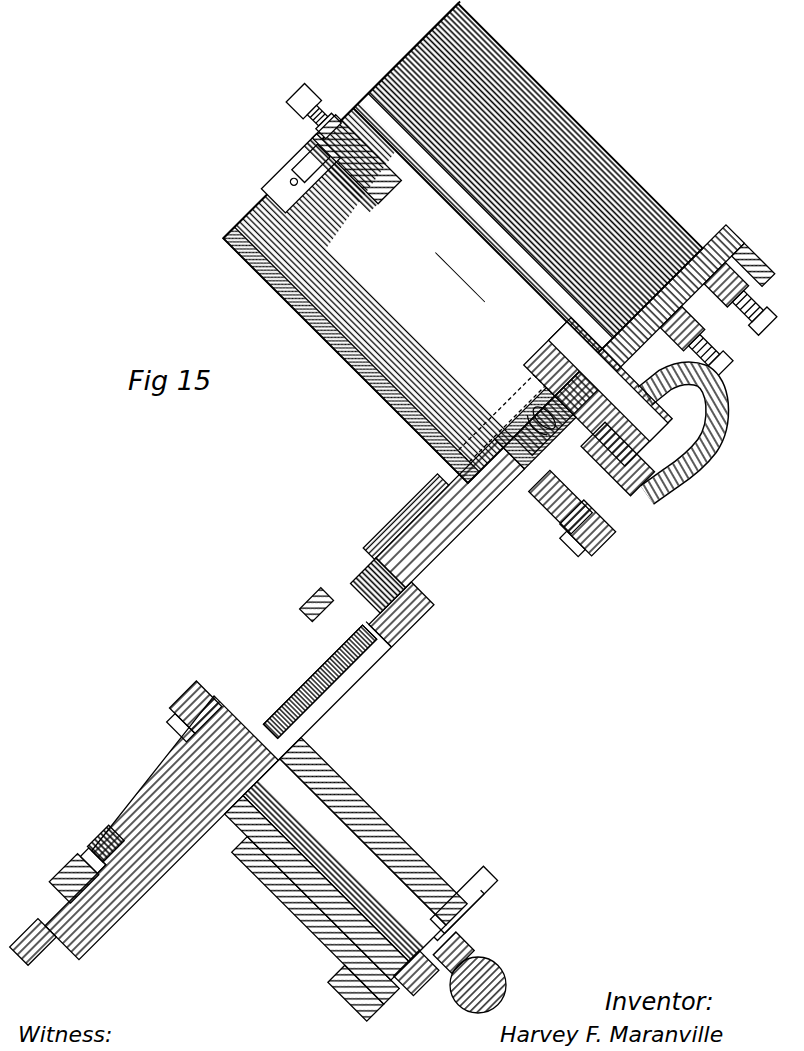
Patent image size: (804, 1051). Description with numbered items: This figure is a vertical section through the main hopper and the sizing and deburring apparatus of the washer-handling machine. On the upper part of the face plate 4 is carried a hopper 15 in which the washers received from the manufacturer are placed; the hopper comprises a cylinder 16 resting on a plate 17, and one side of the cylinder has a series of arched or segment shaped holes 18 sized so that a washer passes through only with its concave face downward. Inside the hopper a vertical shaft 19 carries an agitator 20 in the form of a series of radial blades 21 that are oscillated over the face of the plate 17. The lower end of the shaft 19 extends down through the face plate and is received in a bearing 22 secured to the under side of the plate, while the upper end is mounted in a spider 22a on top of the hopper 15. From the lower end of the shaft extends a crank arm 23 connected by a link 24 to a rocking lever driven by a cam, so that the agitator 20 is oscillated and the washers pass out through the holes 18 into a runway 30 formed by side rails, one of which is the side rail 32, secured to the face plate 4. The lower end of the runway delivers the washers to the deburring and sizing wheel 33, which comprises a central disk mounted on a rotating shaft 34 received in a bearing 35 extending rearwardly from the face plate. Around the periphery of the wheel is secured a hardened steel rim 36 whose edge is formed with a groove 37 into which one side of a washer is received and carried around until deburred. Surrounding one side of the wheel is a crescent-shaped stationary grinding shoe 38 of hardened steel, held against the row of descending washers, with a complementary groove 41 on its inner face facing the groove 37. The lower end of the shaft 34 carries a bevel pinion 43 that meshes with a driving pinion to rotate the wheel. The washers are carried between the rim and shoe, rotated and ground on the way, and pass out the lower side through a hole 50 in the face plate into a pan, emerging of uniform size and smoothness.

The hopper 15 is at (538, 108).
The cylinder 16 is at (384, 393).
The vertical shaft 19 is at (446, 240).
The spider 22a is at (412, 82).
The bearing 22 is at (694, 448).
The crank arm 23 is at (604, 490).
The link 24 is at (568, 545).
The agitator 20 is at (532, 360).
The radial blades 21 is at (542, 405).
The segment shaped holes 18 is at (548, 428).
The plate 17 is at (502, 500).
The face plate 4 is at (470, 545).
The side rail 32 is at (380, 558).
The groove 37 is at (348, 596).
The hardened steel rim 36 is at (320, 616).
The runway 30 is at (385, 612).
The deburring and sizing wheel 33 is at (295, 665).
The complementary groove 41 is at (94, 862).
The grinding shoe 38 is at (68, 886).
The hole 50 is at (22, 962).
The rotating shaft 34 is at (346, 838).
The bearing 35 is at (400, 852).
The bevel pinion 43 is at (478, 882).